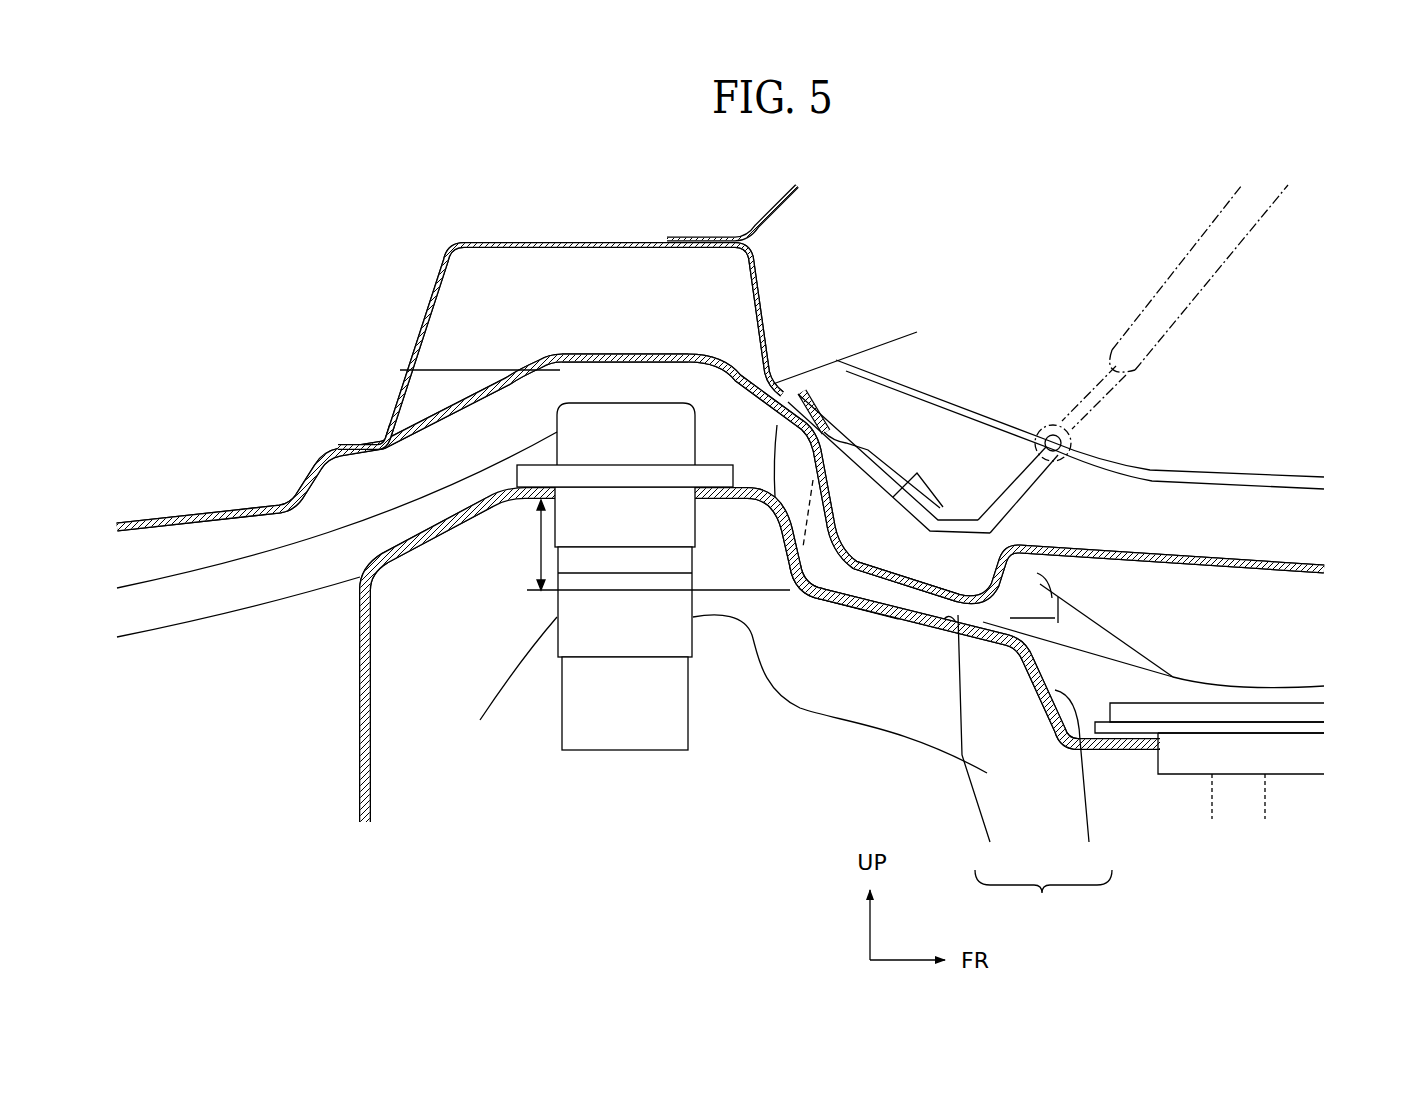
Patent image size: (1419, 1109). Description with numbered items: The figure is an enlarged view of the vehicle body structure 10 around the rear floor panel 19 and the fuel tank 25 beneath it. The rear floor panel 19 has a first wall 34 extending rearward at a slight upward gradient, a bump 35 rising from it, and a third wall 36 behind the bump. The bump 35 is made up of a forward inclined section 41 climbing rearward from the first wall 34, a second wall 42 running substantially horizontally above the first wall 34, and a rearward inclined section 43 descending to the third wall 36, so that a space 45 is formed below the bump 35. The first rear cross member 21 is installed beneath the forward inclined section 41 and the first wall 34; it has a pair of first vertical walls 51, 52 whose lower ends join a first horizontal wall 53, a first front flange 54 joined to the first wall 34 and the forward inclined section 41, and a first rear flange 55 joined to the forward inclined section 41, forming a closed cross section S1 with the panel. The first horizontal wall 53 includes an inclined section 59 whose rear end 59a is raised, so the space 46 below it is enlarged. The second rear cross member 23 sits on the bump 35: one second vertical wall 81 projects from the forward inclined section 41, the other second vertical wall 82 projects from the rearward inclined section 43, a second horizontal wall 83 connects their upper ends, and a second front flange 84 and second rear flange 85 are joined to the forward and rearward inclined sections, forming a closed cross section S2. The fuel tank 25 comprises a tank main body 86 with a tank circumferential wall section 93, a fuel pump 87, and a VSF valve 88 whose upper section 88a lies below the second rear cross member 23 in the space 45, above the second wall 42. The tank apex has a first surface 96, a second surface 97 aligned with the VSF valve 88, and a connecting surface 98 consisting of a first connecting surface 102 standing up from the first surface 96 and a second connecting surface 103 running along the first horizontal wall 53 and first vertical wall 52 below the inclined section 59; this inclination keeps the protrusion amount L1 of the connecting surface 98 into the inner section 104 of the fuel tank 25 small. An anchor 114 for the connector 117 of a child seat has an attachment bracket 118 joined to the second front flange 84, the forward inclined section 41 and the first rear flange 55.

The vehicle body structure 10 is at (929, 166).
The rear floor panel 19 is at (1250, 550).
The first rear cross member 21 is at (803, 488).
The second rear cross member 23 is at (504, 233).
The fuel tank 25 is at (342, 667).
The first wall 34 is at (1190, 547).
The bump 35 is at (641, 350).
The third wall 36 is at (170, 520).
The forward inclined section 41 is at (890, 497).
The second wall 42 is at (697, 352).
The rearward inclined section 43 is at (433, 417).
The space 45 is at (558, 382).
The space 46 is at (890, 600).
The first vertical wall 51 is at (1001, 620).
The first vertical wall 52 is at (823, 507).
The first horizontal wall 53 is at (924, 600).
The first front flange 54 is at (1045, 580).
The first rear flange 55 is at (787, 453).
The inclined section 59 is at (906, 581).
The rear end 59a is at (837, 573).
The second vertical wall 81 is at (757, 310).
The second vertical wall 82 is at (425, 305).
The second horizontal wall 83 is at (572, 240).
The second front flange 84 is at (812, 408).
The second rear flange 85 is at (368, 443).
The tank main body 86 is at (352, 715).
The fuel pump 87 is at (1305, 750).
The VSF valve 88 is at (549, 605).
The upper section 88a is at (573, 416).
The tank circumferential wall section 93 is at (358, 760).
The first surface 96 is at (1140, 737).
The second surface 97 is at (713, 487).
The connecting surface 98 is at (1043, 899).
The first connecting surface 102 is at (1083, 781).
The second connecting surface 103 is at (988, 744).
The inner section 104 is at (618, 796).
The anchor 114 is at (1035, 478).
The connector 117 is at (1130, 322).
The attachment bracket 118 is at (925, 500).
The protrusion amount L1 is at (646, 545).
The closed cross section S1 is at (858, 570).
The closed cross section S2 is at (447, 262).